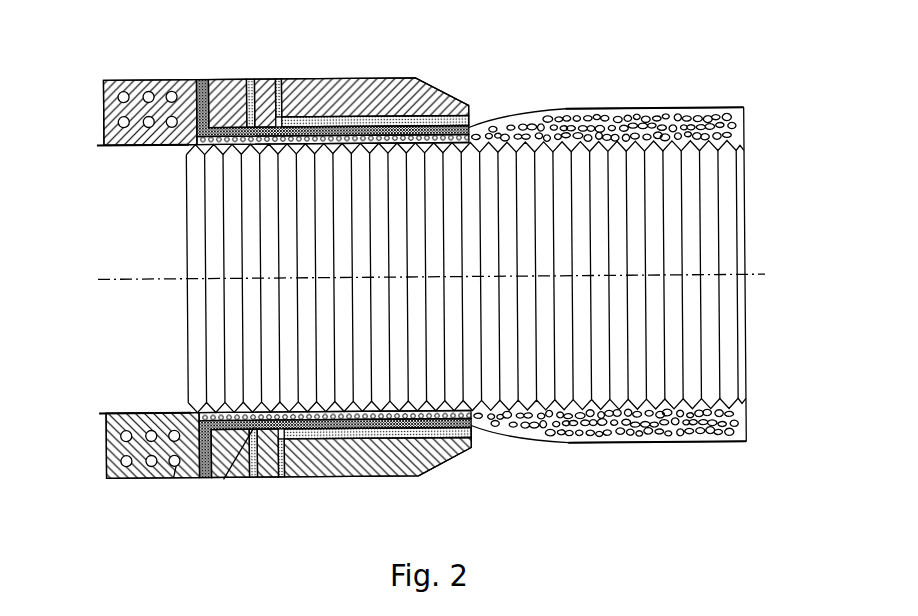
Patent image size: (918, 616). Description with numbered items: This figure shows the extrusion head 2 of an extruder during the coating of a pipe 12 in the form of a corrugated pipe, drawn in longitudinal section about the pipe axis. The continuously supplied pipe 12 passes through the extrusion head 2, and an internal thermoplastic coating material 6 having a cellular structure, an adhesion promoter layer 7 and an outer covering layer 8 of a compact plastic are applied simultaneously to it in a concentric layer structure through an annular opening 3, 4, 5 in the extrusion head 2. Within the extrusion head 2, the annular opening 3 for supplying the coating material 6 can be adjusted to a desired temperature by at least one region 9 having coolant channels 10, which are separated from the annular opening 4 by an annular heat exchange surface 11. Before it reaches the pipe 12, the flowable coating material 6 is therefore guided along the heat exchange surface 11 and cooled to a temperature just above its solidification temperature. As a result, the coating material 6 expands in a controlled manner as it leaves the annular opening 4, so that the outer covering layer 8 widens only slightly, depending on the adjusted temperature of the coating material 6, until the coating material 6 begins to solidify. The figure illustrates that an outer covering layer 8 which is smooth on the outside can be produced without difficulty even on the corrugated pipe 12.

The extrusion head 2 is at (108, 72).
The annular opening 3 is at (228, 127).
The annular opening 4 is at (258, 122).
The annular opening 5 is at (324, 117).
The coating material 6 is at (742, 131).
The adhesion promoter layer 7 is at (745, 441).
The outer covering layer 8 is at (727, 107).
The region 9 is at (116, 110).
The coolant channels 10 is at (181, 84).
The heat exchange surface 11 is at (400, 147).
The pipe 12 is at (186, 192).